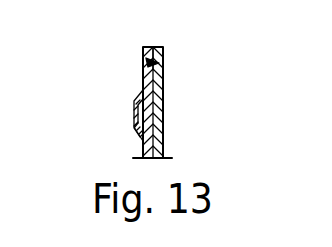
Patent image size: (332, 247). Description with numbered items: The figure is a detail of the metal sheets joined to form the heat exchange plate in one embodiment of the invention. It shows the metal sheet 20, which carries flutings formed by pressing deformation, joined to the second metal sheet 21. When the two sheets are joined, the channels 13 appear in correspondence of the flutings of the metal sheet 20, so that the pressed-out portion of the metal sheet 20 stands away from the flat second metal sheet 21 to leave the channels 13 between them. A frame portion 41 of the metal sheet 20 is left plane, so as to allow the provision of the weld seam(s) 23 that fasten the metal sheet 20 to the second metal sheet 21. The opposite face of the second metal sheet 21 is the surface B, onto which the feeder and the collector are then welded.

The channel 13 is at (134, 129).
The metal sheet 20 is at (134, 110).
The second metal sheet 21 is at (165, 93).
The weld seam 23 is at (147, 62).
The frame portion 41 is at (126, 77).
The surface B is at (165, 138).